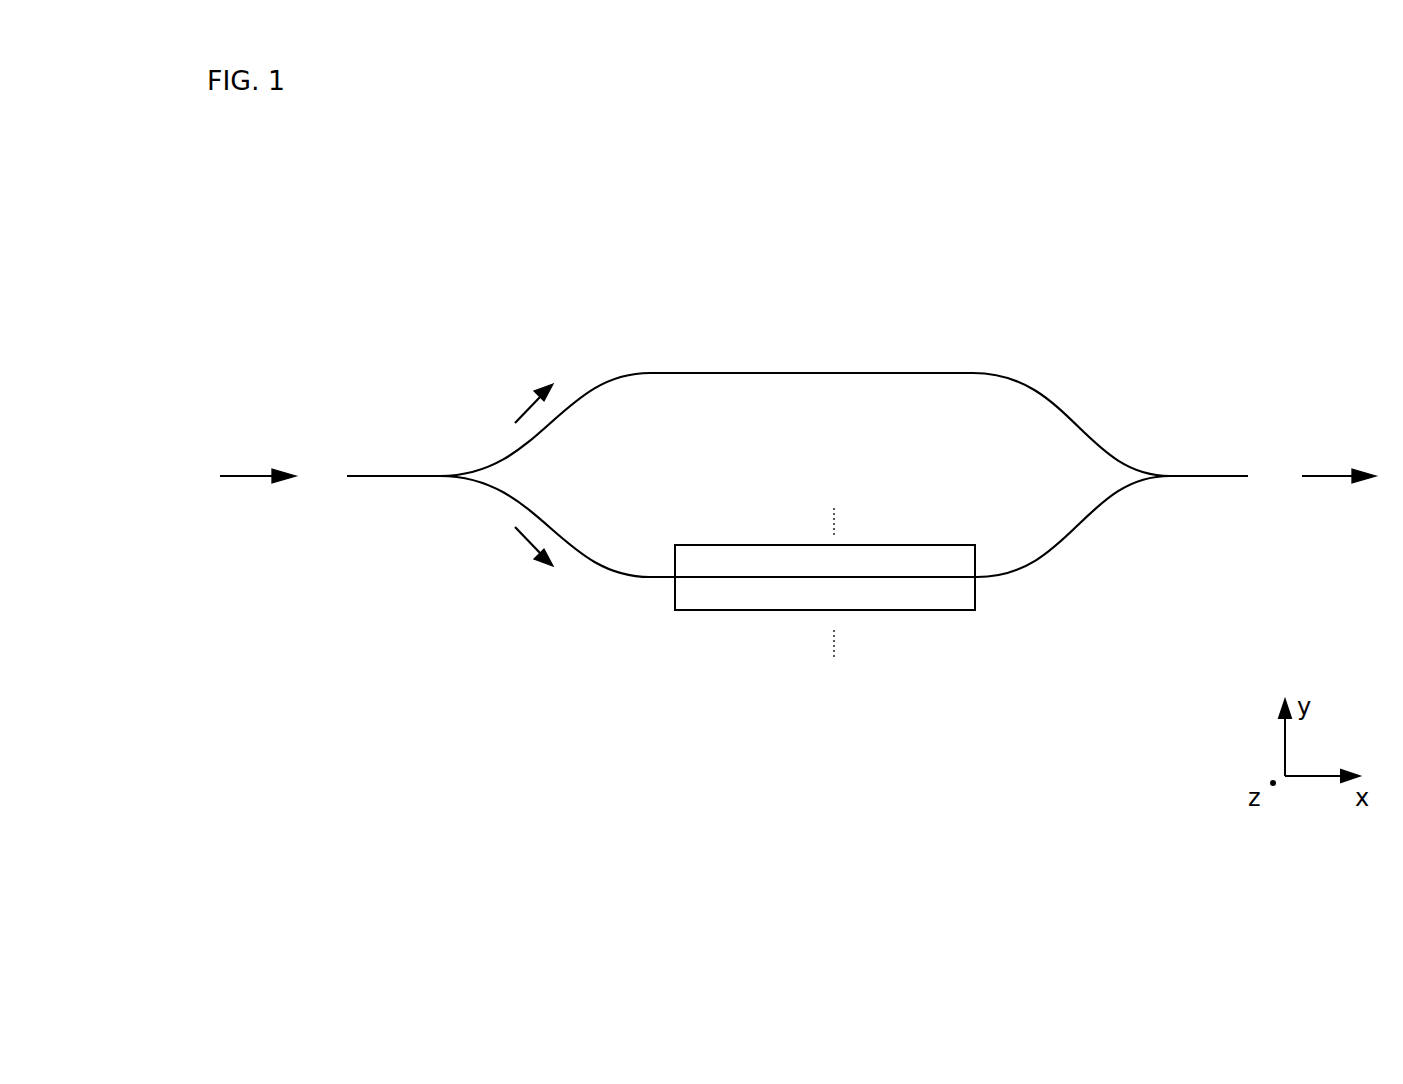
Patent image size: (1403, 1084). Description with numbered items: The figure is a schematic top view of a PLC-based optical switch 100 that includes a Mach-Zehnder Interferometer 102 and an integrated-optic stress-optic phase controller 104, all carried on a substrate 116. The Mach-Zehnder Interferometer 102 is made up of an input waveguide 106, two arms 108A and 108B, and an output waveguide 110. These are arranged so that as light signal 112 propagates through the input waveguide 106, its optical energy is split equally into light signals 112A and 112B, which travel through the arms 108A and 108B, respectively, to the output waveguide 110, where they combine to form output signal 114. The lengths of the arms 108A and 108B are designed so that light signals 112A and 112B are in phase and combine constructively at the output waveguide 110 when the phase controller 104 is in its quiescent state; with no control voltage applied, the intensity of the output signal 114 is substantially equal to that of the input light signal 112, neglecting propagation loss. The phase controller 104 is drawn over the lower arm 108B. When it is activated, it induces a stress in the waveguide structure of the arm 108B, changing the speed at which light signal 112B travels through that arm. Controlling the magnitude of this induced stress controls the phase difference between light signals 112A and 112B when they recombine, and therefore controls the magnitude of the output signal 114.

The switch 100 is at (297, 311).
The Mach-Zehnder Interferometer 102 is at (495, 329).
The phase controller 104 is at (721, 626).
The input waveguide 106 is at (408, 478).
The arm 108A is at (553, 406).
The arm 108B is at (553, 542).
The output waveguide 110 is at (1228, 478).
The light signal 112 is at (258, 458).
The light signal 112A is at (505, 403).
The light signal 112B is at (503, 546).
The output signal 114 is at (1339, 458).
The substrate 116 is at (1237, 397).